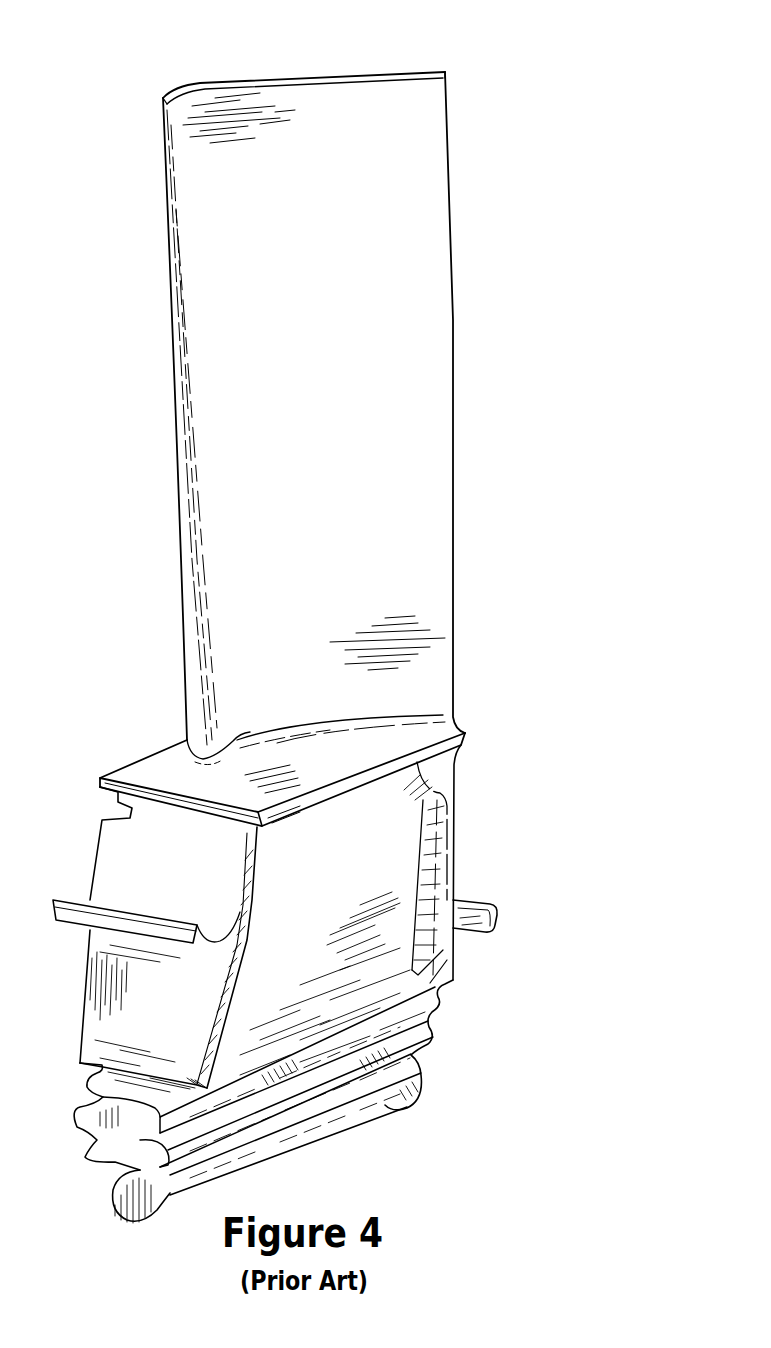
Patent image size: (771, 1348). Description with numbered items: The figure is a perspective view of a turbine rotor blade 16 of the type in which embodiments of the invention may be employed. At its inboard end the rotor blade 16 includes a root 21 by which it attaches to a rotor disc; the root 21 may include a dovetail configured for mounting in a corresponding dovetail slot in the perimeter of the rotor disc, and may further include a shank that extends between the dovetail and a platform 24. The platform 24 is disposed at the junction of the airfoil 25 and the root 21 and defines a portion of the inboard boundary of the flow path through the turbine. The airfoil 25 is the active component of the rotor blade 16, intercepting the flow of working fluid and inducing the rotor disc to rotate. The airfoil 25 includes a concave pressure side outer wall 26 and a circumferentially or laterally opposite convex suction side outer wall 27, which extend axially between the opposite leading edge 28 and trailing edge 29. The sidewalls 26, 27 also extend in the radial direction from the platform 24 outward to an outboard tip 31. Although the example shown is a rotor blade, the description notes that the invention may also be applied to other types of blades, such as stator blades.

The turbine rotor blade 16 is at (582, 57).
The root 21 is at (505, 1018).
The platform 24 is at (183, 797).
The airfoil 25 is at (525, 250).
The concave pressure side outer wall 26 is at (337, 479).
The convex suction side outer wall 27 is at (480, 535).
The leading edge 28 is at (175, 390).
The trailing edge 29 is at (455, 415).
The outboard tip 31 is at (244, 82).